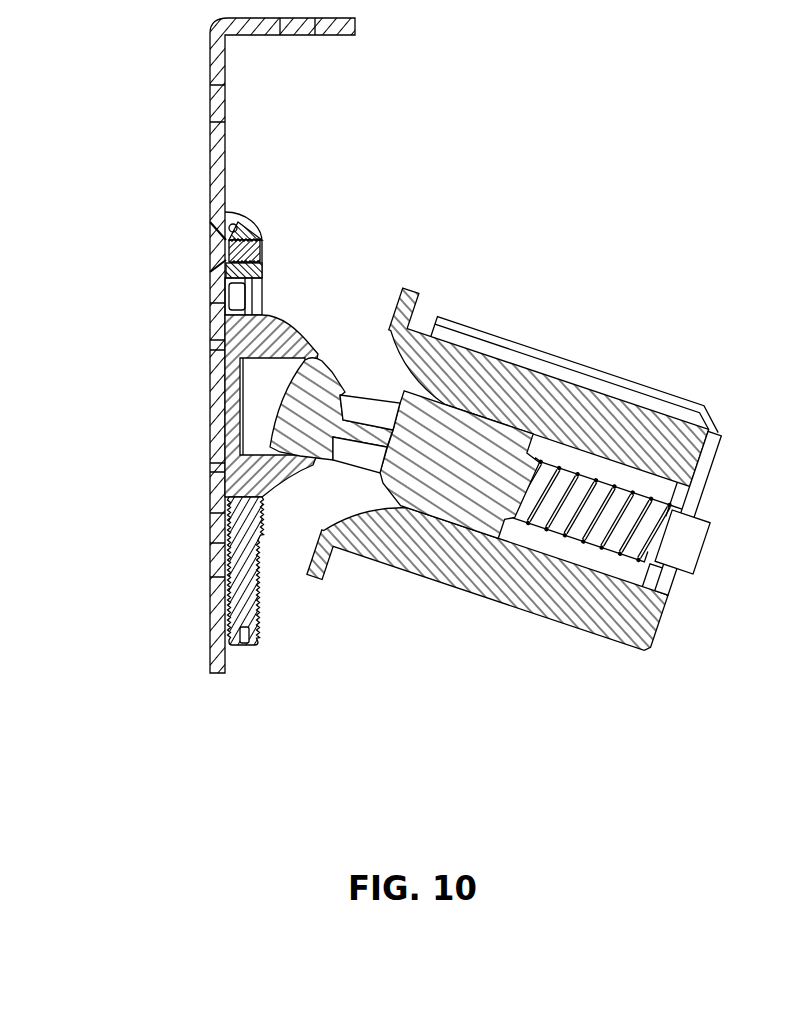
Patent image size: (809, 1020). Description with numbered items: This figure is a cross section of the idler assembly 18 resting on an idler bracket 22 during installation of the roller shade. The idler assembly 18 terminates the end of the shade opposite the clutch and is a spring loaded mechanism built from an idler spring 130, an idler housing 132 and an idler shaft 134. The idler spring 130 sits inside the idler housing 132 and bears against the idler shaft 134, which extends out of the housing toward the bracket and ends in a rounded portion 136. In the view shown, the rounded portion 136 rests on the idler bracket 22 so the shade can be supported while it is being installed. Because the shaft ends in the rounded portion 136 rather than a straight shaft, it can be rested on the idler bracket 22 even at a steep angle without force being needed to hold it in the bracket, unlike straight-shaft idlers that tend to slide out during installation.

The idler assembly 18 is at (482, 284).
The idler bracket 22 is at (211, 165).
The idler spring 130 is at (578, 470).
The idler housing 132 is at (590, 604).
The idler shaft 134 is at (435, 482).
The rounded portion 136 is at (316, 403).